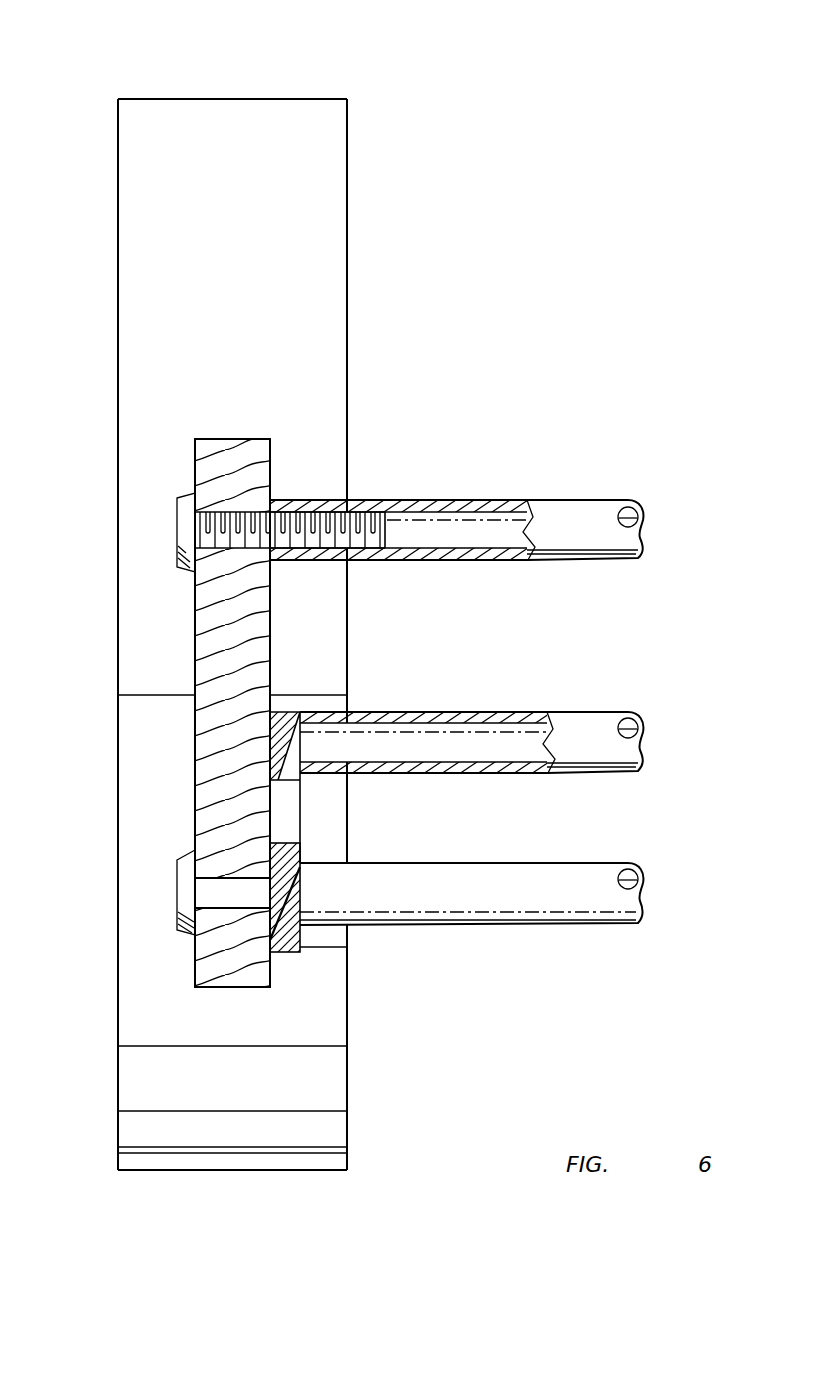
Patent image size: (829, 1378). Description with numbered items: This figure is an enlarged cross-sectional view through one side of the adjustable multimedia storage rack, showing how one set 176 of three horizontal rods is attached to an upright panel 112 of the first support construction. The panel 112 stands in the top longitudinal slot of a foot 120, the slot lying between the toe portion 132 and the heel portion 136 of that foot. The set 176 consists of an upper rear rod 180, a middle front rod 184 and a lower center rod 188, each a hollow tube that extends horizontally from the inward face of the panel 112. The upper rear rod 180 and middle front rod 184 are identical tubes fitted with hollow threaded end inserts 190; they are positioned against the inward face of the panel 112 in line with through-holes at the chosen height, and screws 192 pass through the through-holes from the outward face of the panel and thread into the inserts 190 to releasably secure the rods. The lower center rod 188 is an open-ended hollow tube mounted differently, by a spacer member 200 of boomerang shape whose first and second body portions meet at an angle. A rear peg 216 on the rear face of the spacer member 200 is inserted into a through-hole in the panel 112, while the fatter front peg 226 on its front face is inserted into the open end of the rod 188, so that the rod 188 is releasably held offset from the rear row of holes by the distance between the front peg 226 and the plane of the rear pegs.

The upright panel 112 is at (215, 735).
The foot 120 is at (320, 272).
The toe portion 132 is at (232, 99).
The heel portion 136 is at (243, 1135).
The set of rods 176 is at (645, 623).
The upper rear rod 180 is at (556, 514).
The middle front rod 184 is at (462, 902).
The lower center rod 188 is at (580, 723).
The hollow threaded end insert 190 is at (317, 507).
The screw 192 is at (185, 540).
The spacer member 200 is at (288, 940).
The rear peg 216 is at (268, 880).
The front peg 226 is at (334, 742).